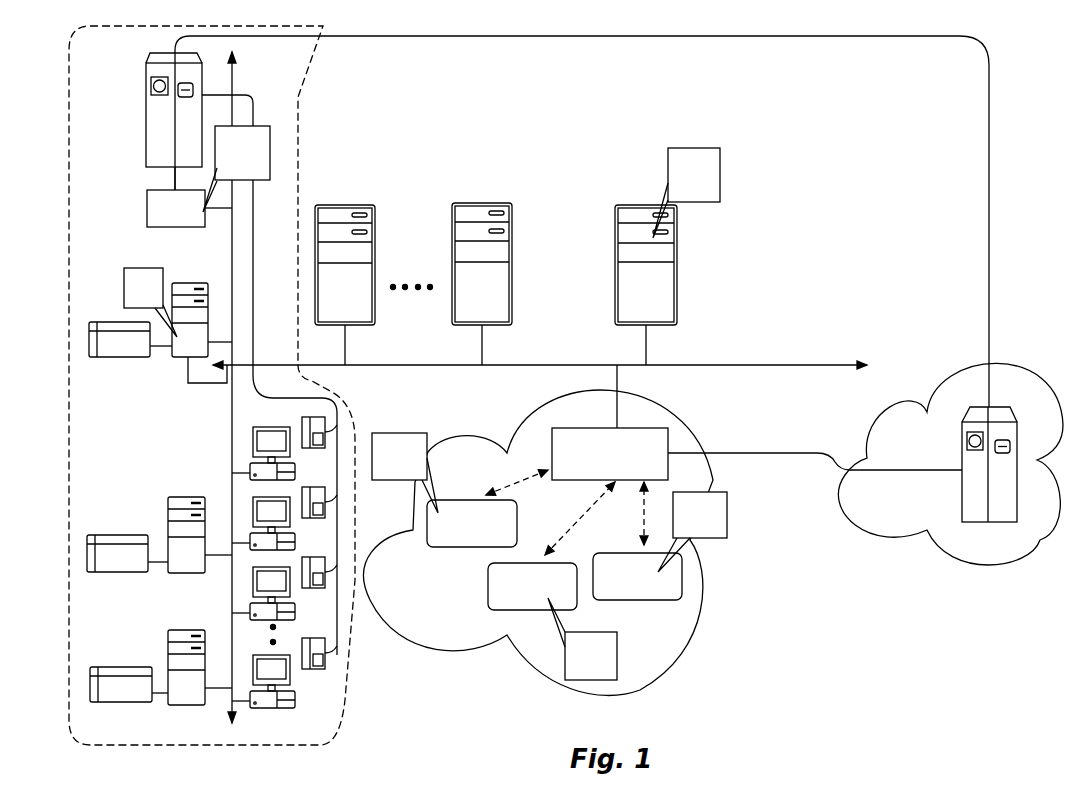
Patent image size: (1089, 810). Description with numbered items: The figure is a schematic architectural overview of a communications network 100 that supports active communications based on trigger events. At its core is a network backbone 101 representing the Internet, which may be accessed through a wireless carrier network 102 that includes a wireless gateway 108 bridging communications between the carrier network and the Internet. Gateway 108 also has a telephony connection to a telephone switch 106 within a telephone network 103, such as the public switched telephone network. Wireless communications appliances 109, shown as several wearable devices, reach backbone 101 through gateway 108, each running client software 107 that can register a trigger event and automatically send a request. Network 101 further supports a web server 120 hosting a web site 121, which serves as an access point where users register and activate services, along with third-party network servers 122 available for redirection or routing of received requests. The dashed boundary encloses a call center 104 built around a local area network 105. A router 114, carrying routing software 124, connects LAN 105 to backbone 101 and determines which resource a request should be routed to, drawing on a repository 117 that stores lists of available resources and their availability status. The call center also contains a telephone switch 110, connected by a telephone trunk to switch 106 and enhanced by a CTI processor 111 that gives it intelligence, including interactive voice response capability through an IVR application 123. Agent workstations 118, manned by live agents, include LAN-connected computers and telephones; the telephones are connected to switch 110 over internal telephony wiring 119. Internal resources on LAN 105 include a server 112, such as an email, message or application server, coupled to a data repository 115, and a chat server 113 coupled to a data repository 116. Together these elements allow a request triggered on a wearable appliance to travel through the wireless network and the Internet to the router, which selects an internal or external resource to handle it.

The communications network 100 is at (905, 168).
The network backbone 101 is at (725, 365).
The wireless carrier network 102 is at (507, 453).
The telephone network 103 is at (867, 444).
The call center 104 is at (340, 425).
The local area network 105 is at (232, 275).
The telephone switch 106 is at (962, 462).
The client applications 107 is at (737, 523).
The wireless gateway 108 is at (602, 428).
The wireless communications appliances 109 is at (478, 598).
The telephone switch 110 is at (146, 95).
The CTI processor 111 is at (146, 220).
The server 112 is at (168, 530).
The chat server 113 is at (168, 660).
The router 114 is at (200, 283).
The data repository 115 is at (132, 533).
The data repository 116 is at (128, 667).
The repository 117 is at (107, 357).
The agent workstations 118 is at (208, 468).
The CTI link 119 is at (255, 115).
The web server 120 is at (677, 273).
The web site 121 is at (697, 148).
The network servers 122 is at (413, 200).
The IVR application 123 is at (270, 152).
The software 124 is at (123, 293).